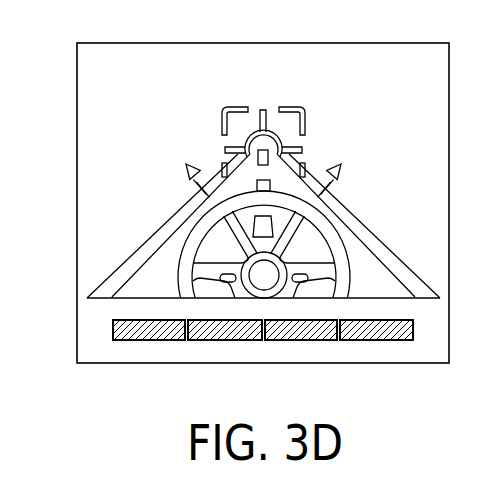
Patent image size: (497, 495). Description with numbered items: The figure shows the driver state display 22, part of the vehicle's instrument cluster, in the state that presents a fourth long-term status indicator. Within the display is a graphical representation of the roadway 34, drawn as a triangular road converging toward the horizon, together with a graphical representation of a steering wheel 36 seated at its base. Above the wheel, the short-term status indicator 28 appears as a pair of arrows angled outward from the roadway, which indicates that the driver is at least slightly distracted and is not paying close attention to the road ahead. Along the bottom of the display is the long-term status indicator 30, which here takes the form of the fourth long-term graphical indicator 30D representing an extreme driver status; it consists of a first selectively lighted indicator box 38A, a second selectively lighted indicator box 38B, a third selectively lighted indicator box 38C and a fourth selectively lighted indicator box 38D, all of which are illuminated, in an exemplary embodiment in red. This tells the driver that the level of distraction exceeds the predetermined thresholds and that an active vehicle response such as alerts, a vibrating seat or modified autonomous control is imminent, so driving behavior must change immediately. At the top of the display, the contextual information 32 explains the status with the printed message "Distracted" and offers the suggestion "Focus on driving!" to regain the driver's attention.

The driver state display 22 is at (68, 134).
The contextual information 32 is at (358, 59).
The short-term status indicator 28 is at (188, 185).
The graphical representation of the roadway 34 is at (338, 212).
The graphical representation of a steering wheel 36 is at (198, 233).
The long-term status indicator 30 is at (252, 371).
The fourth long-term graphical indicator 30D is at (263, 357).
The first selectively lighted indicator box 38A is at (152, 332).
The second selectively lighted indicator box 38B is at (225, 332).
The third selectively lighted indicator box 38C is at (300, 330).
The fourth selectively lighted indicator box 38D is at (375, 330).